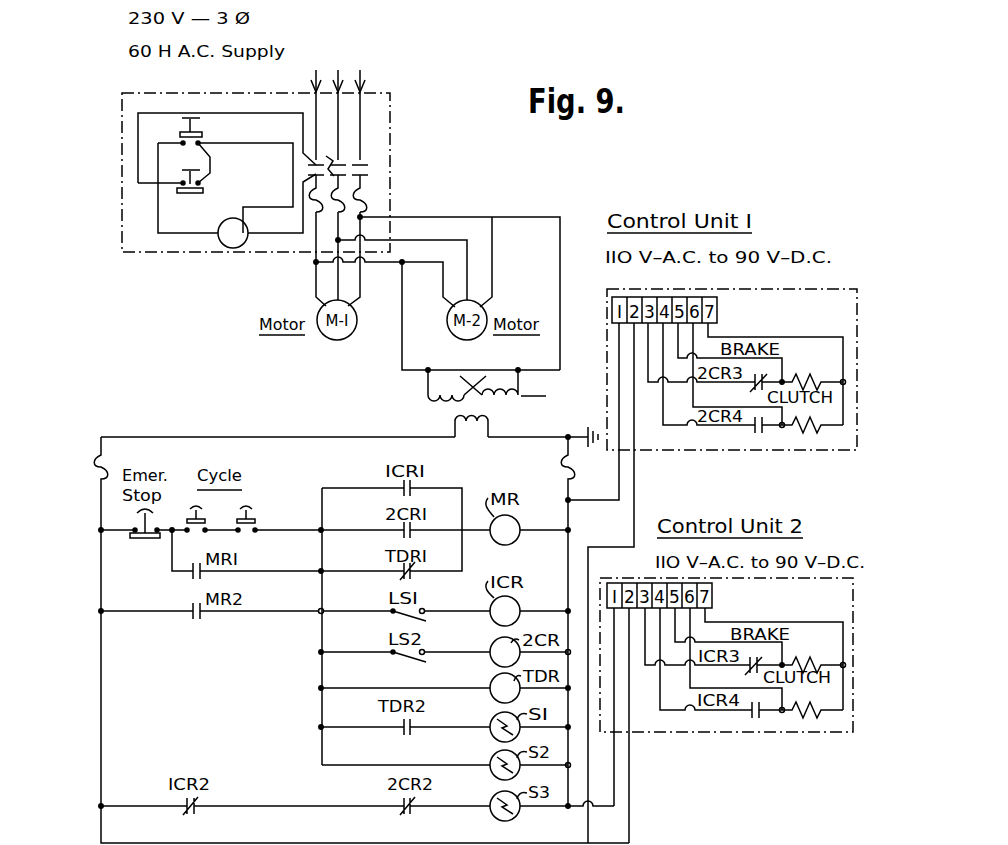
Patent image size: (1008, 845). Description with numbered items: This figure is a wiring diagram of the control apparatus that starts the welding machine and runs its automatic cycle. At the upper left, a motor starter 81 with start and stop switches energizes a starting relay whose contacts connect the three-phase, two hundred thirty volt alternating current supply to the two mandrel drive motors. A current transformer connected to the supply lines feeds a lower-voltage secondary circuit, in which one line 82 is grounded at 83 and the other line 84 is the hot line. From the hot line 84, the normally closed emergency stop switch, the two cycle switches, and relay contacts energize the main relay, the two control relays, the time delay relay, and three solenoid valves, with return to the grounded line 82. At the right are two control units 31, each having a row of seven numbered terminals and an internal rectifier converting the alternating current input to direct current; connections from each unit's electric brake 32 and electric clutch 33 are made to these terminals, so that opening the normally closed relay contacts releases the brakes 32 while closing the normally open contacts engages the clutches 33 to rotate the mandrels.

The motor starter 81 is at (390, 168).
The grounded line 82 is at (513, 437).
The ground 83 is at (586, 434).
The hot line 84 is at (248, 437).
The control unit 31 is at (857, 358).
The electric brake 32 is at (811, 376).
The electric clutch 33 is at (818, 420).